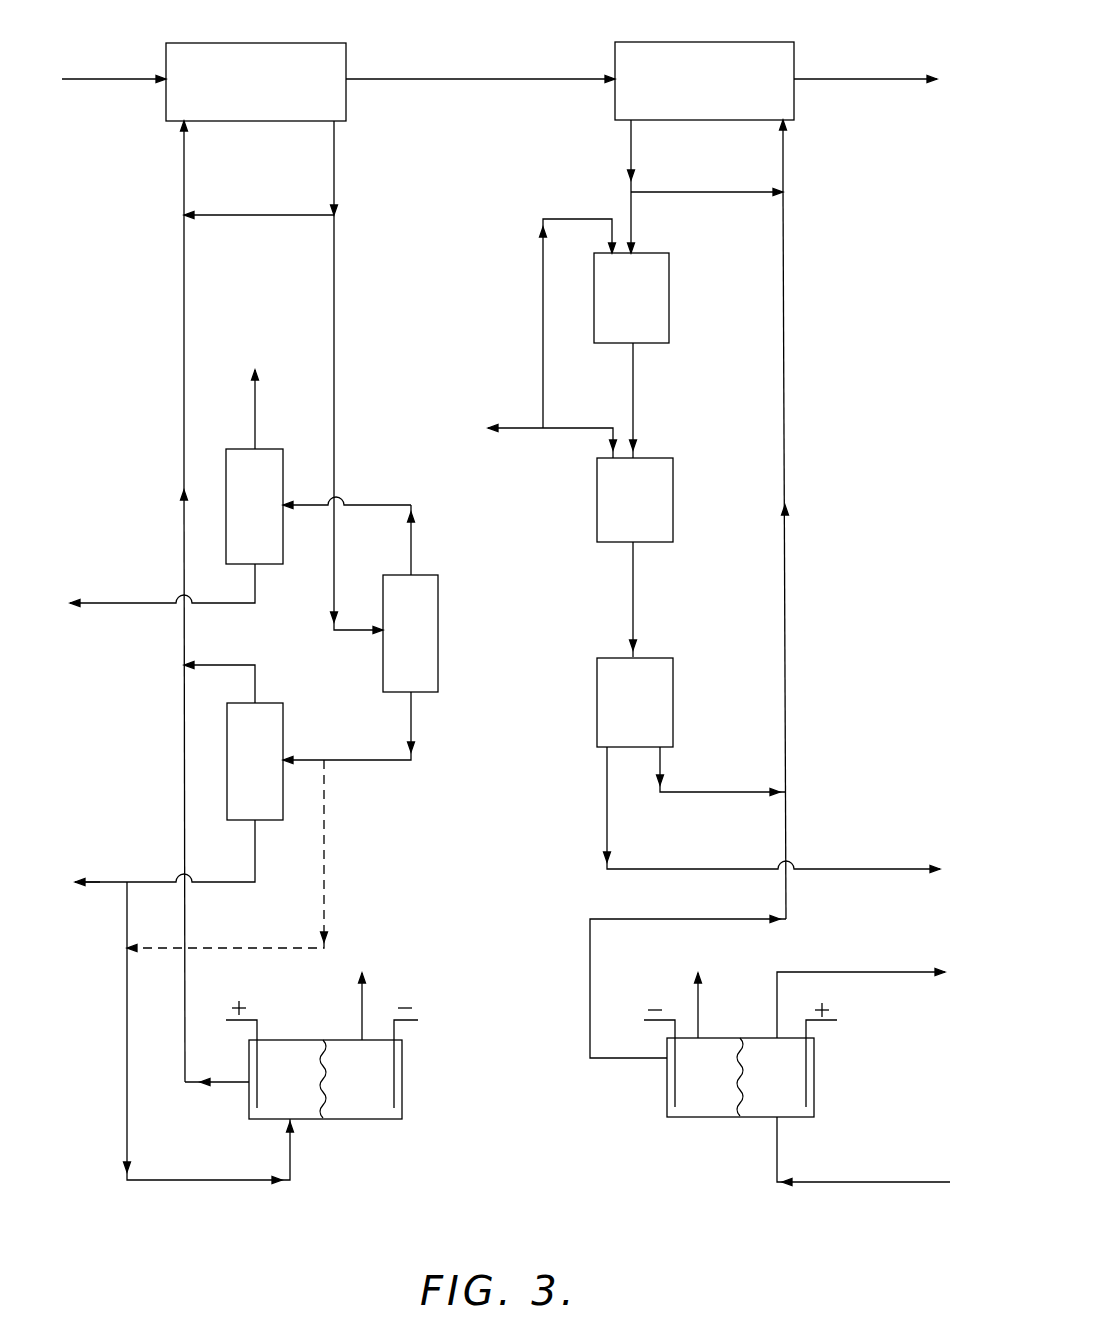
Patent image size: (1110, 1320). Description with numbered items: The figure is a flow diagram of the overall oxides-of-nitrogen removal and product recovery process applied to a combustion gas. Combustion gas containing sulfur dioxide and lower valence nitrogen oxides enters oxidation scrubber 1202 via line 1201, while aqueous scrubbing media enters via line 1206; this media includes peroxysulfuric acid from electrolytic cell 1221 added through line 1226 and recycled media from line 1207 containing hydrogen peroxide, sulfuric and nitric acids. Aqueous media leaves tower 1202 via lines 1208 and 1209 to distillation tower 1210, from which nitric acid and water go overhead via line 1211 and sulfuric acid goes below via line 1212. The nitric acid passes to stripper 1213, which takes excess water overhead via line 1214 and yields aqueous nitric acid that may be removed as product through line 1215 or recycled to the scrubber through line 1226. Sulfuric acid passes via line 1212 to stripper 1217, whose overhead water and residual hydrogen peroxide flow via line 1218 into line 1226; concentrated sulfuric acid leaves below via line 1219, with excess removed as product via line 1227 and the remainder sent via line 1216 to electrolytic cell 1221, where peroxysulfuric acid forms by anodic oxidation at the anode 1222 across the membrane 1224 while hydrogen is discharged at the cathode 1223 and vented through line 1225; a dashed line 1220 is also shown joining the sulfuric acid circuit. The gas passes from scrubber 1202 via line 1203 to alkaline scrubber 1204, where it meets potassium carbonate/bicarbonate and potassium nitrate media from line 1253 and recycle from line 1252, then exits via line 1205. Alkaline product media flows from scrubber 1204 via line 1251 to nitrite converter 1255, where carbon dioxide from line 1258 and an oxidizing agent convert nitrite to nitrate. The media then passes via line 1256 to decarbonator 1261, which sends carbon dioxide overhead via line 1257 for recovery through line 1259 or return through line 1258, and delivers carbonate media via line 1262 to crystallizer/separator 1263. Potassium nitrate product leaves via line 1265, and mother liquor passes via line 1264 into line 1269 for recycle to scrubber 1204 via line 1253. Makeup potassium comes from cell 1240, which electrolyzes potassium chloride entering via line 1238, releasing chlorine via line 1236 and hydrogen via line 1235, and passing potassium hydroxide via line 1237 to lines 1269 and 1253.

The line 1201 is at (97, 60).
The oxidation scrubber 1202 is at (276, 95).
The line 1203 is at (490, 60).
The alkaline scrubber 1204 is at (722, 95).
The line 1205 is at (892, 60).
The line 1206 is at (184, 178).
The line 1207 is at (262, 220).
The line 1208 is at (336, 162).
The line 1209 is at (336, 314).
The distillation tower 1210 is at (426, 629).
The line 1211 is at (411, 543).
The line 1212 is at (411, 722).
The stripper 1213 is at (270, 497).
The line 1214 is at (255, 424).
The line 1215 is at (256, 587).
The line 1216 is at (196, 1182).
The stripper 1217 is at (270, 761).
The line 1218 is at (228, 657).
The line 1219 is at (255, 856).
The optional bypass line (dashed) 1220 is at (326, 867).
The electrolytic cell 1221 is at (282, 1108).
The anode 1222 is at (274, 1076).
The cathode 1223 is at (394, 1083).
The membrane 1224 is at (330, 1108).
The gas outlet line 1225 is at (362, 1001).
The line 1226 is at (184, 460).
The line 1227 is at (108, 870).
The line 1235 is at (725, 1000).
The line 1236 is at (890, 964).
The line 1237 is at (630, 1060).
The line 1238 is at (890, 1185).
The cell 1240 is at (712, 1105).
The line 1251 is at (631, 153).
The line 1252 is at (708, 194).
The line 1253 is at (785, 160).
The nitrite converter 1255 is at (648, 308).
The line 1256 is at (635, 392).
The line 1257 is at (578, 426).
The line 1258 is at (543, 278).
The line 1259 is at (526, 432).
The decarbonator 1261 is at (648, 511).
The line 1262 is at (633, 613).
The crystallizer/separator 1263 is at (650, 713).
The line 1264 is at (662, 763).
The line 1265 is at (607, 821).
The line 1269 is at (787, 566).